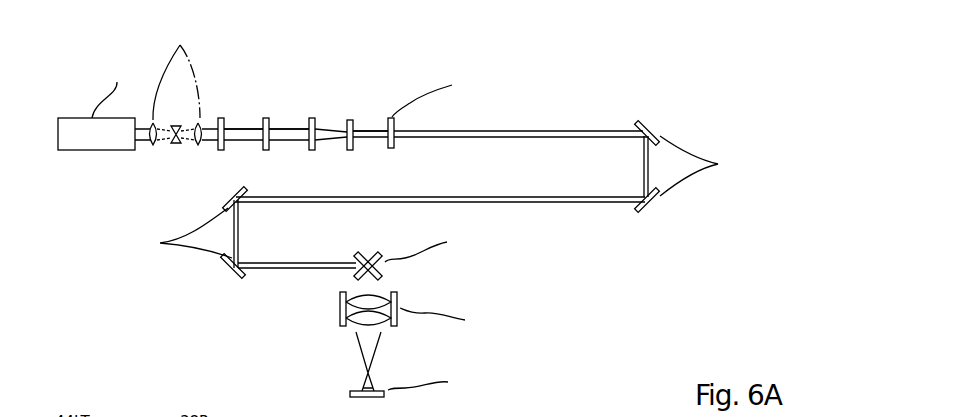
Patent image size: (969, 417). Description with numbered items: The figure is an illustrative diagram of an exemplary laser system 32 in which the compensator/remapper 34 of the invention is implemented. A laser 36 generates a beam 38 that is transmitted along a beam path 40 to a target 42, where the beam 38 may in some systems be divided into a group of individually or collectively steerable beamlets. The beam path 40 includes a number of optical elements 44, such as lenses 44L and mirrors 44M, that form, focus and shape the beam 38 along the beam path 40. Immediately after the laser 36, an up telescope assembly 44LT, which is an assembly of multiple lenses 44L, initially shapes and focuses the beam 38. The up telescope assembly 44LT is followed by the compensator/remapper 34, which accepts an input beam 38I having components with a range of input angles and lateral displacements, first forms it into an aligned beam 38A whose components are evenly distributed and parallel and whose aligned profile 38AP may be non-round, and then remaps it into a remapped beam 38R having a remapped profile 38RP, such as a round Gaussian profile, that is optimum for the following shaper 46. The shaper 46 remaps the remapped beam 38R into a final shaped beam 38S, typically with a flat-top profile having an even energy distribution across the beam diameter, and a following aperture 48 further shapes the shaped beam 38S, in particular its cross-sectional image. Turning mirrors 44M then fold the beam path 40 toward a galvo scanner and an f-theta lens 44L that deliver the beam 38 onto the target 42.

The system 32 is at (782, 315).
The compensator/remapper 34 is at (330, 219).
The laser 36 is at (72, 152).
The beam 38 is at (146, 123).
The input beam 38I is at (210, 104).
The aligned beam 38A is at (285, 112).
The aligned profile 38AP is at (337, 216).
The shaped beam 38S is at (428, 89).
The remapped beam 38R is at (396, 154).
The remapped profile 38RP is at (322, 152).
The beam path 40 is at (441, 209).
The target 42 is at (372, 400).
The optical element 44 is at (221, 134).
The lens 44L is at (330, 238).
The up telescope assembly 44LT is at (168, 154).
The mirror 44M is at (170, 293).
The shaper 46 is at (352, 153).
The aperture 48 is at (398, 117).